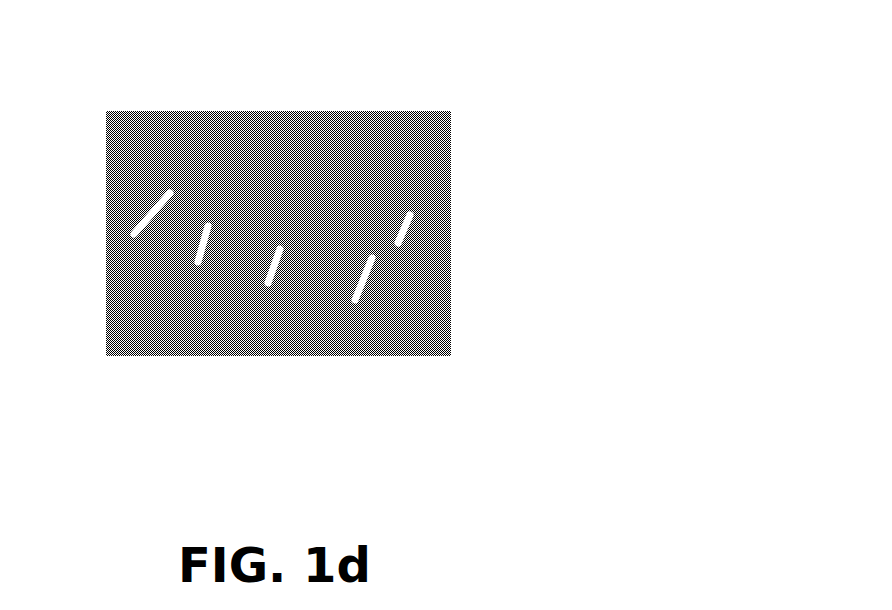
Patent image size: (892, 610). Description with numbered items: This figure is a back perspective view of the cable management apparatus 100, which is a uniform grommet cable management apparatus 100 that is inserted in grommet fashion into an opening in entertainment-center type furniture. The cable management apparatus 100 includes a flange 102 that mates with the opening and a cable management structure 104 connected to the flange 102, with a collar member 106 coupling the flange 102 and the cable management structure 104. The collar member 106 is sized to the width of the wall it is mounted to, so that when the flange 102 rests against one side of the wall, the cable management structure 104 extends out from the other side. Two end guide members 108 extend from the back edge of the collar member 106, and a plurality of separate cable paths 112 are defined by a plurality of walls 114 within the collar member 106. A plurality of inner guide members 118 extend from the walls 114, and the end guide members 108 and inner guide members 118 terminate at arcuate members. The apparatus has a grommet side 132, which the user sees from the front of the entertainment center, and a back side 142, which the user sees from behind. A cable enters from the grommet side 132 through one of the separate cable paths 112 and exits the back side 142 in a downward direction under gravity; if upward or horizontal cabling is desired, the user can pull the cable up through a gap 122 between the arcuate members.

The cable management apparatus 100 is at (482, 106).
The flange 102 is at (410, 207).
The cable management structure 104 is at (398, 325).
The collar member 106 is at (185, 180).
The end guide members 108 is at (133, 215).
The separate cable paths 112 is at (287, 325).
The walls 114 is at (217, 230).
The inner guide members 118 is at (128, 247).
The gap 122 is at (170, 242).
The grommet side 132 is at (190, 76).
The back side 142 is at (163, 442).